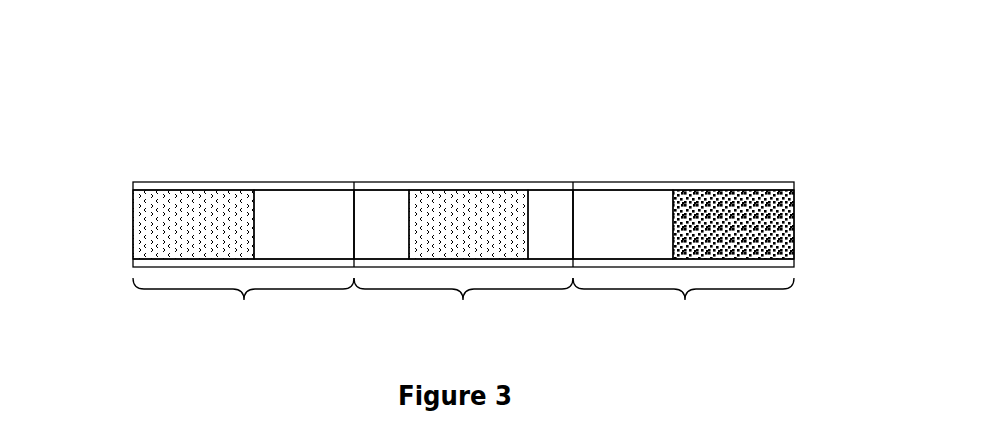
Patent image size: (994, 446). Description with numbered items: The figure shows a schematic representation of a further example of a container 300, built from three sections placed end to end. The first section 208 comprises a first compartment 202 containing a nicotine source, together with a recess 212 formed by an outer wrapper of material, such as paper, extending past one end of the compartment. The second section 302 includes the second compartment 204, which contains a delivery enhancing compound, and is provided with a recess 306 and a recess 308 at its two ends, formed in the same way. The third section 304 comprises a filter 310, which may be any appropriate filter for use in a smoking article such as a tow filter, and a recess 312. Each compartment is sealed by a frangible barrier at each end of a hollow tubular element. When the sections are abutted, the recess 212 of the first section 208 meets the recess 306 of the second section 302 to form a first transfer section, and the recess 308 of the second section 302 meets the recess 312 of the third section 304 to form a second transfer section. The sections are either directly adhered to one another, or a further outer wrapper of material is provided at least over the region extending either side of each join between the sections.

The layered structure 300 is at (340, 105).
The first compartment 202 is at (165, 205).
The second compartment 204 is at (489, 203).
The first section 208 is at (243, 306).
The recess 212 is at (289, 201).
The second section 302 is at (463, 306).
The third section 304 is at (683, 306).
The recess 306 is at (387, 206).
The recess 308 is at (549, 203).
The filter 310 is at (727, 206).
The recess 312 is at (637, 206).